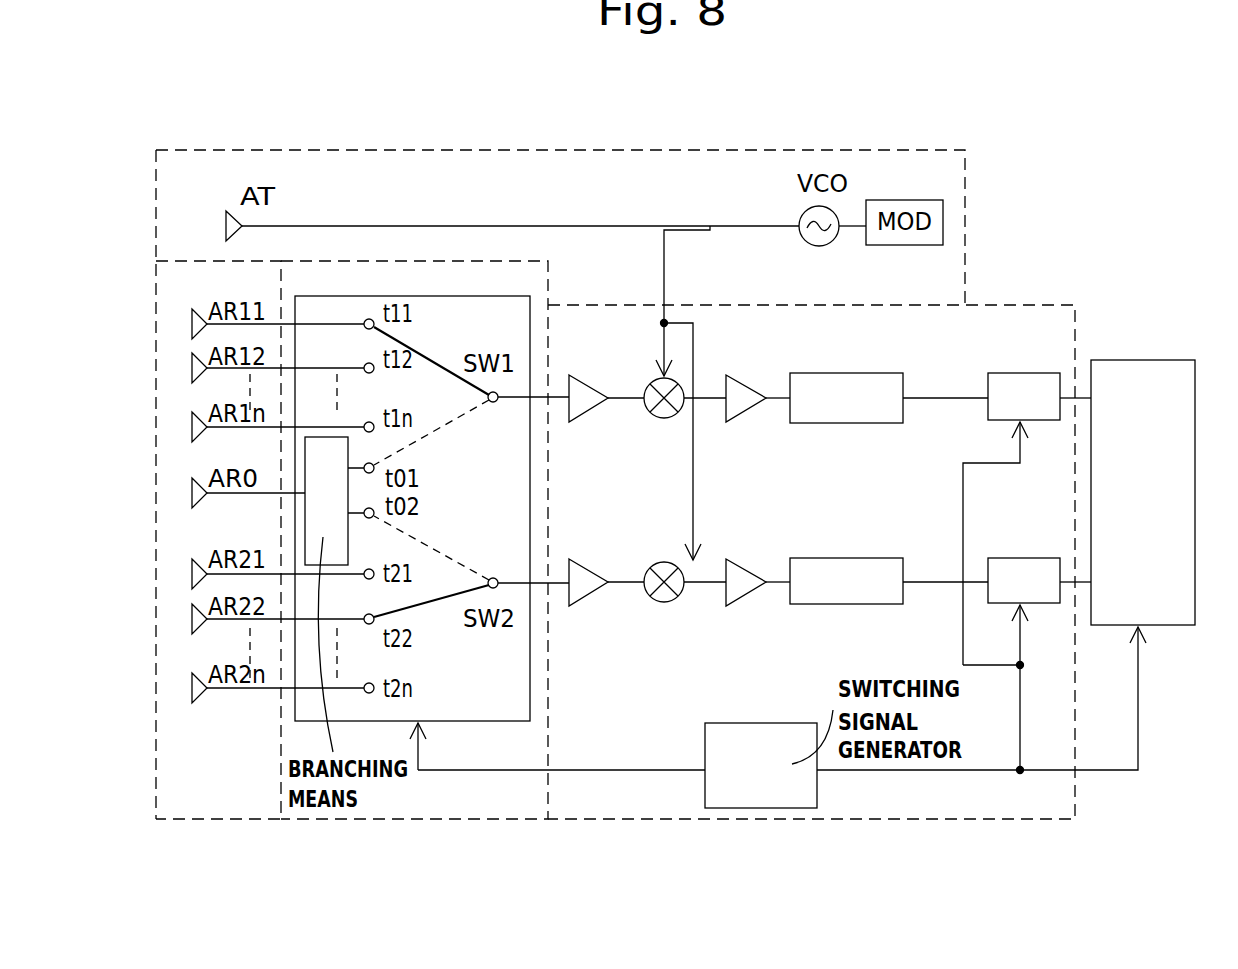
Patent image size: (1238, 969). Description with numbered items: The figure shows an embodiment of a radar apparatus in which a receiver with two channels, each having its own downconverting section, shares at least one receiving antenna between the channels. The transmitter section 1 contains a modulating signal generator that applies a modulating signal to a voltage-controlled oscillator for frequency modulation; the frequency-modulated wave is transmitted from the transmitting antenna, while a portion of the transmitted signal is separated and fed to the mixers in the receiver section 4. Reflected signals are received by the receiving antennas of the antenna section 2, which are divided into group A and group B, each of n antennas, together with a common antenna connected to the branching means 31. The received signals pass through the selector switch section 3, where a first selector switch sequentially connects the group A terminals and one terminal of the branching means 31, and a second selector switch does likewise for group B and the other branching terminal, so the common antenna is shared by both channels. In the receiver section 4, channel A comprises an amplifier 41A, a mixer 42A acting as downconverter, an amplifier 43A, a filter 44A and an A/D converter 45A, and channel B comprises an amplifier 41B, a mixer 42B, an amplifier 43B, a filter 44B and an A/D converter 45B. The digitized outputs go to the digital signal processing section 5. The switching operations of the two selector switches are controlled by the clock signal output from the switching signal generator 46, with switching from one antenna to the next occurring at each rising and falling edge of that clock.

The transmitter section 1 is at (612, 150).
The antenna section 2 is at (240, 821).
The selector switch section 3 is at (362, 821).
The receiver section 4 is at (620, 821).
The digital signal processing section 5 is at (1143, 360).
The branching means 31 is at (348, 548).
The amplifier 41A is at (592, 420).
The mixer 42A is at (664, 420).
The amplifier 43A is at (748, 420).
The filter 44A is at (848, 425).
The A/D converter 45A is at (1022, 373).
The amplifier 41B is at (592, 604).
The mixer 42B is at (664, 604).
The amplifier 43B is at (748, 604).
The filter 44B is at (848, 606).
The A/D converter 45B is at (1022, 558).
The switching signal generator 46 is at (780, 723).